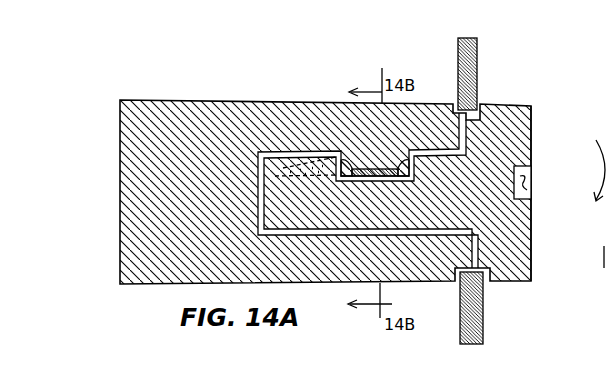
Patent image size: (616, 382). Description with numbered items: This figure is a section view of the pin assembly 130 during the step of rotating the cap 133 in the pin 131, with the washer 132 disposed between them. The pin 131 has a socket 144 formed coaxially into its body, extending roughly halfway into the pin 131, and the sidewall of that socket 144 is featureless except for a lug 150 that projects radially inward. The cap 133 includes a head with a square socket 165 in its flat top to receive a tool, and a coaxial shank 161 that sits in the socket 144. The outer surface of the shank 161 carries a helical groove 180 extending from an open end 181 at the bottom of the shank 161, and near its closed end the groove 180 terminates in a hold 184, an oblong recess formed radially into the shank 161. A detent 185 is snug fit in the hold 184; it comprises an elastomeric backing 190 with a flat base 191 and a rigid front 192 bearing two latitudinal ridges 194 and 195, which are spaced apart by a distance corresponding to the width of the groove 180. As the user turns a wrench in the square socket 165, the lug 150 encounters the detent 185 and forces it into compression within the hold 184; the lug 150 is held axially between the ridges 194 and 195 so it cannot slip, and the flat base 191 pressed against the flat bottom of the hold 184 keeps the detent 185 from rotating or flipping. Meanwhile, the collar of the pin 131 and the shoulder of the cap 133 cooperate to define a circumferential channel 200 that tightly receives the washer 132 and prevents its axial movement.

The pin assembly 130 is at (238, 61).
The pin 131 is at (165, 93).
The washer 132 is at (486, 324).
The cap 133 is at (533, 115).
The socket 144 is at (434, 229).
The lug 150 is at (389, 177).
The shank 161 is at (362, 232).
The square socket 165 is at (532, 181).
The groove 180 is at (290, 166).
The open end 181 is at (290, 234).
The hold 184 is at (337, 156).
The detent 185 is at (411, 160).
The elastomeric backing 190 is at (333, 178).
The flat base 191 is at (342, 183).
The front 192 is at (335, 165).
The latitudinal ridge 194 is at (410, 158).
The latitudinal ridge 195 is at (345, 150).
The circumferential channel 200 is at (481, 88).